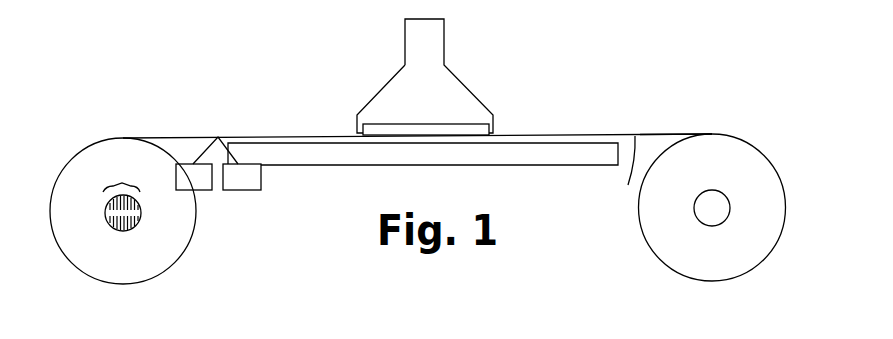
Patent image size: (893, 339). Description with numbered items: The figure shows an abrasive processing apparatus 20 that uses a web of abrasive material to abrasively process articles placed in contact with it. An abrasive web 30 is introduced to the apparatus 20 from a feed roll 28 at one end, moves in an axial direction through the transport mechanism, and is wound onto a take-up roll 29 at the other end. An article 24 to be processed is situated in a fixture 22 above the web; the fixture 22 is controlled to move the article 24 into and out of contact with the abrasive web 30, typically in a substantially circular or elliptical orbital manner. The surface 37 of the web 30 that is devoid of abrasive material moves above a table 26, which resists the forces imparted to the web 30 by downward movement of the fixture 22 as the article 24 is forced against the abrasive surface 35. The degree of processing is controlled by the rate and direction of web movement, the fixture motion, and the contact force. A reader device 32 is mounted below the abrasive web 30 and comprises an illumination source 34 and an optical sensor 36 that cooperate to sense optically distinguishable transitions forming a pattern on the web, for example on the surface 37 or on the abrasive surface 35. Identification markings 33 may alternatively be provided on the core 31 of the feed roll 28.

The abrasive processing apparatus 20 is at (657, 40).
The fixture 22 is at (473, 92).
The article 24 is at (395, 123).
The table 26 is at (450, 167).
The feed roll 28 is at (130, 285).
The take-up roll 29 is at (720, 281).
The abrasive web 30 is at (185, 137).
The core 31 is at (106, 218).
The reader device 32 is at (270, 182).
The markings 33 is at (121, 193).
The illumination source 34 is at (203, 190).
The abrasive surface 35 is at (655, 133).
The optical sensor 36 is at (252, 190).
The surface devoid of abrasive material 37 is at (619, 171).